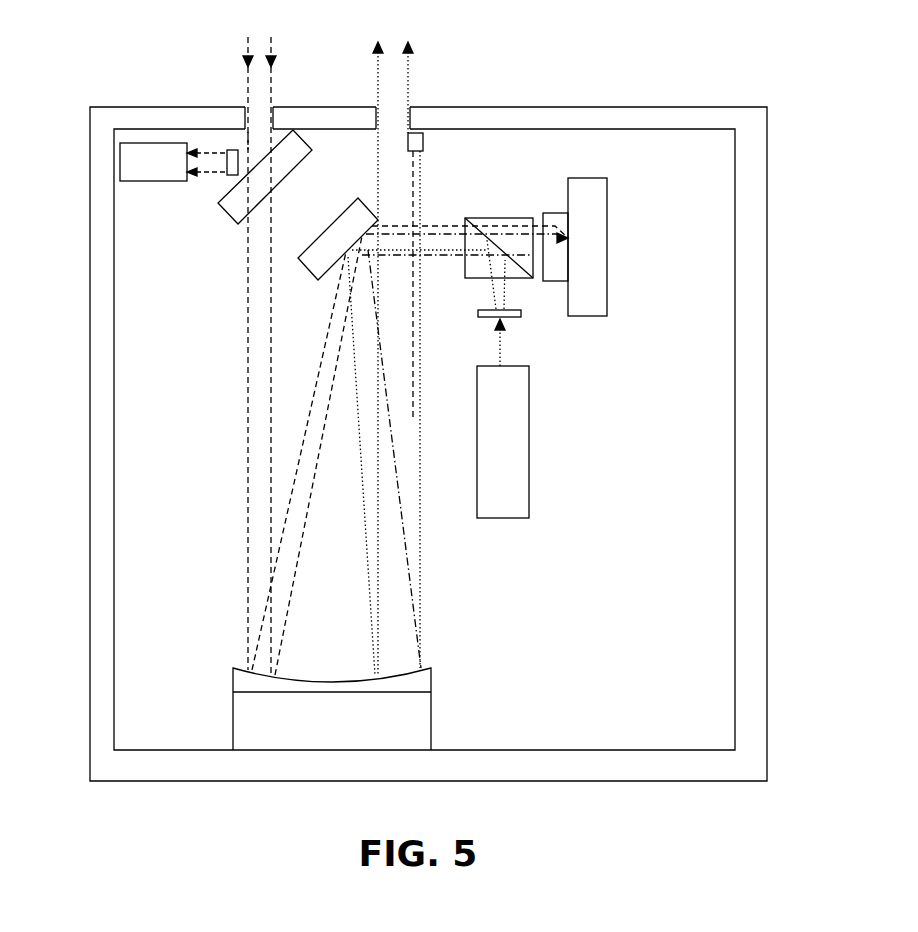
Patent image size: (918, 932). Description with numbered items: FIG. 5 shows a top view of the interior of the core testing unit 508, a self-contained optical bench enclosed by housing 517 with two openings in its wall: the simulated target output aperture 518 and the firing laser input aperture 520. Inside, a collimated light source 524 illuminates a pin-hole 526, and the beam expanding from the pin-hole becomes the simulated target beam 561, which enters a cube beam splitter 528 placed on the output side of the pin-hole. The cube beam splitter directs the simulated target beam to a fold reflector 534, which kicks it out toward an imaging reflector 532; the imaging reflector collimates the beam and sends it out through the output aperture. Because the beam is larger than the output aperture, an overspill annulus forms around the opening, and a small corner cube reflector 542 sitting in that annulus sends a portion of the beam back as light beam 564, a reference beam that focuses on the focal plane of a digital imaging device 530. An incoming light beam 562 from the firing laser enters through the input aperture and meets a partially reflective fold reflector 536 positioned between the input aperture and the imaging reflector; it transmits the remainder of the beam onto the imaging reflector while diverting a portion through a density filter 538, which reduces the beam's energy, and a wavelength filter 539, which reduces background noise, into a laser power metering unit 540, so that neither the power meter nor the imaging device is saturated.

The core testing unit 508 is at (140, 70).
The housing 517 is at (767, 353).
The simulated target output aperture 518 is at (395, 103).
The firing laser input aperture 520 is at (258, 100).
The collimated light source 524 is at (490, 421).
The pin-hole 526 is at (500, 310).
The cube beam splitter 528 is at (492, 218).
The digital imaging device 530 is at (582, 177).
The imaging reflector 532 is at (233, 680).
The fold reflector 534 is at (320, 282).
The partially reflective fold reflector 536 is at (232, 220).
The density filter 538 is at (247, 130).
The wavelength filter 539 is at (228, 150).
The laser power metering unit 540 is at (157, 182).
The corner cube reflector 542 is at (423, 142).
The simulated target beam 561 is at (415, 102).
The light beam 562 is at (272, 48).
The light beam 564 is at (412, 173).